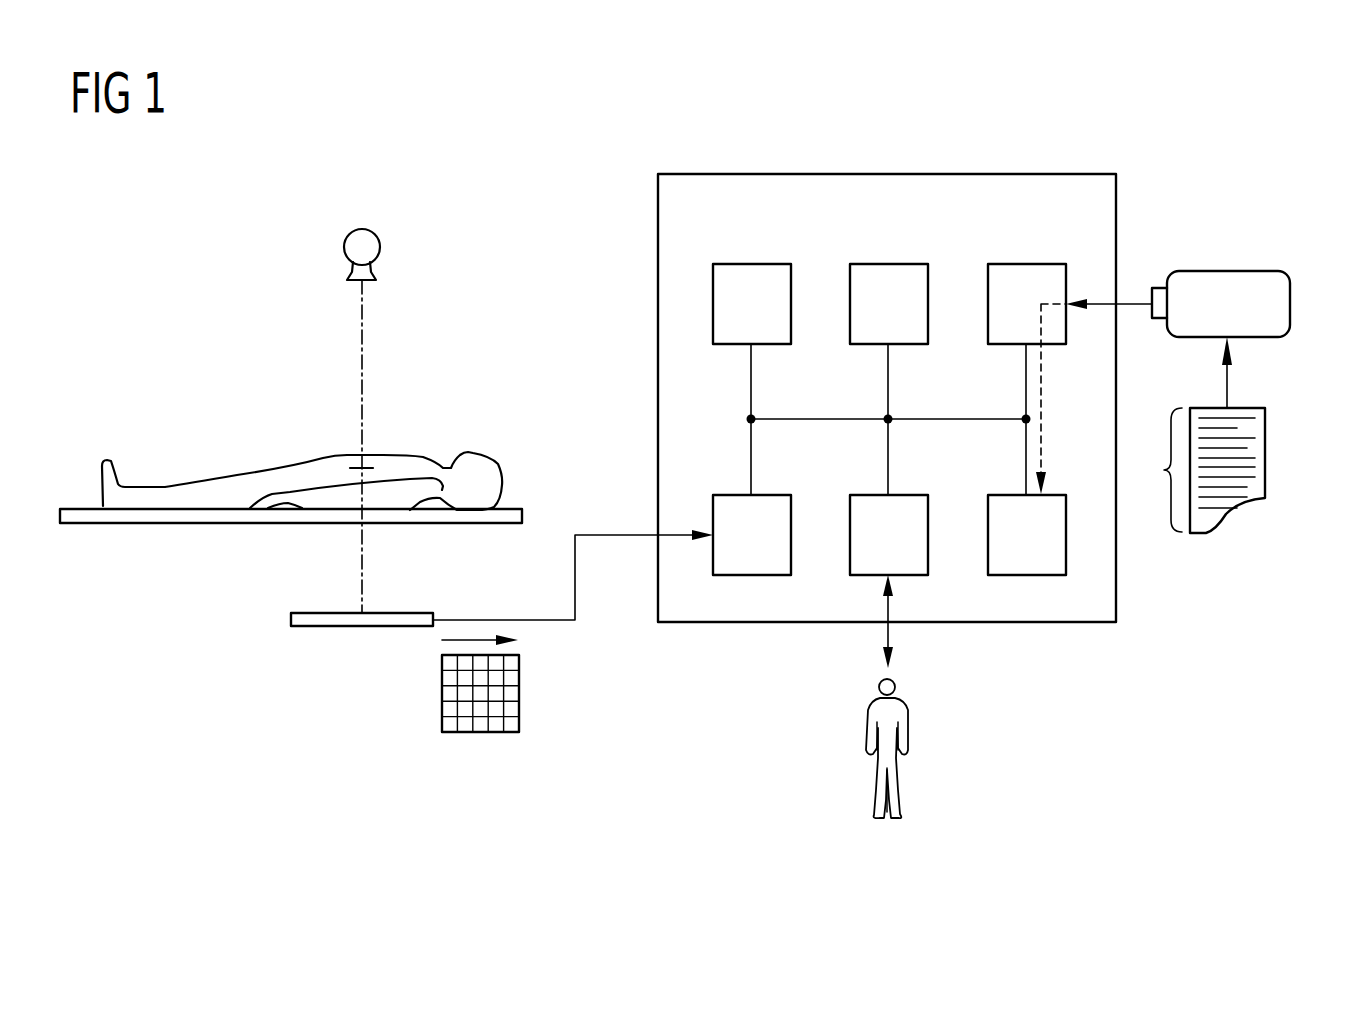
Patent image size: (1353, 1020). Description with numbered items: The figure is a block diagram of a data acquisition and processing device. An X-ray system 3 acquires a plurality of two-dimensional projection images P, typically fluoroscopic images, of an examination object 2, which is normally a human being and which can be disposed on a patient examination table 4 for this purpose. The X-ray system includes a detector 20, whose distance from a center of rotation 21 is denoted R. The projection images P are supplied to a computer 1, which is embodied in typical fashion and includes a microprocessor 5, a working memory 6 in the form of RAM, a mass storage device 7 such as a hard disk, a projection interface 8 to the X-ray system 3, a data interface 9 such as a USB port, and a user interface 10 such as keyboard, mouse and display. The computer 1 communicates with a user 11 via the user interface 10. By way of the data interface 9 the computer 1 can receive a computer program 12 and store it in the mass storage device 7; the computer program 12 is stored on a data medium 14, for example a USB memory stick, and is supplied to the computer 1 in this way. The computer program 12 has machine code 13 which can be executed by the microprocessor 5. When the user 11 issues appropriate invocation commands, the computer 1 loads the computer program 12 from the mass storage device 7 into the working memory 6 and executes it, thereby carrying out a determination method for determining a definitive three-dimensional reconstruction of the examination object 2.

The computer 1 is at (925, 174).
The examination object 2 is at (235, 476).
The X-ray system 3 is at (331, 374).
The patient examination table 4 is at (82, 507).
The microprocessor 5 is at (750, 263).
The working memory 6 is at (888, 263).
The mass storage device 7 is at (1052, 494).
The projection interface 8 is at (770, 494).
The data interface 9 is at (1034, 263).
The user interface 10 is at (912, 494).
The user 11 is at (912, 727).
The computer program 12 is at (1267, 453).
The machine code 13 is at (1155, 470).
The data medium 14 is at (1226, 270).
The detector 20 is at (320, 627).
The center of rotation 21 is at (367, 457).
The projection images P is at (478, 733).